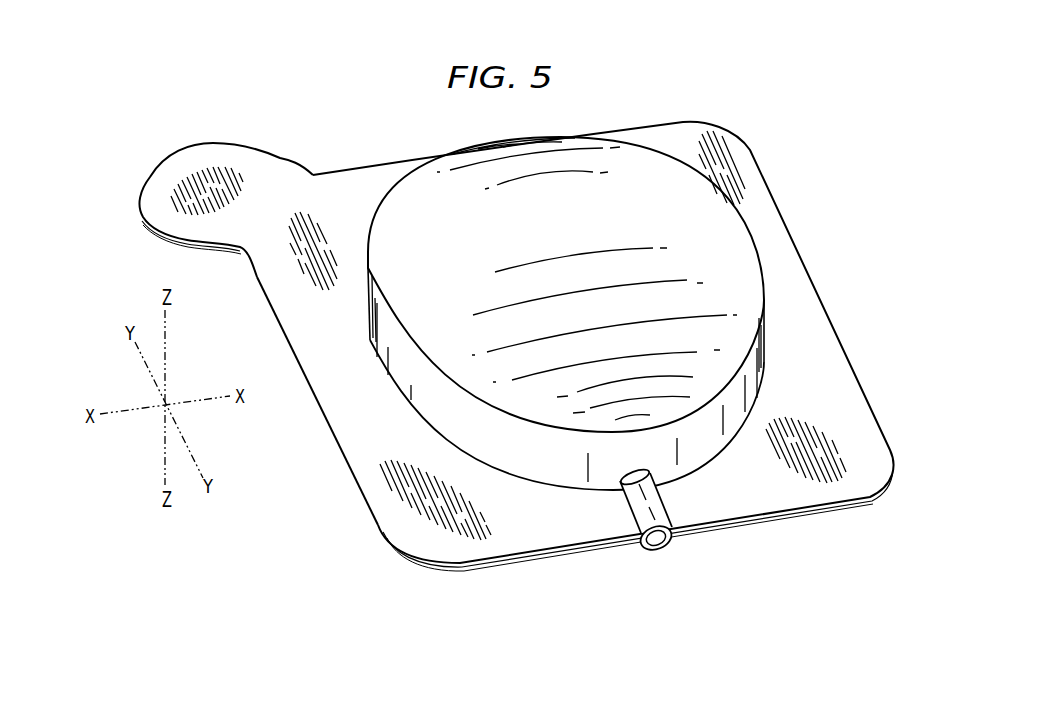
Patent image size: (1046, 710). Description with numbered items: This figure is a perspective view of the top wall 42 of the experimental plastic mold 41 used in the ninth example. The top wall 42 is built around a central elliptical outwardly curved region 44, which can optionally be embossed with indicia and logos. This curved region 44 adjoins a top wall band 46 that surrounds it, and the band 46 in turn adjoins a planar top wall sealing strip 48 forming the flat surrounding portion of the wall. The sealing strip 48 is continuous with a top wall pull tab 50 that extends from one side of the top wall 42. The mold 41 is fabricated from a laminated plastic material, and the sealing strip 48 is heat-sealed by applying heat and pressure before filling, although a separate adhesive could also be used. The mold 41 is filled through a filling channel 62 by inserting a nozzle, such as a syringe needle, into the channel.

The mold 41 is at (672, 109).
The top wall 42 is at (396, 134).
The central elliptical outwardly curved region 44 is at (566, 231).
The top wall band 46 is at (503, 456).
The top wall sealing strip 48 is at (361, 411).
The top wall pull tab 50 is at (275, 221).
The filling channel 62 is at (657, 554).